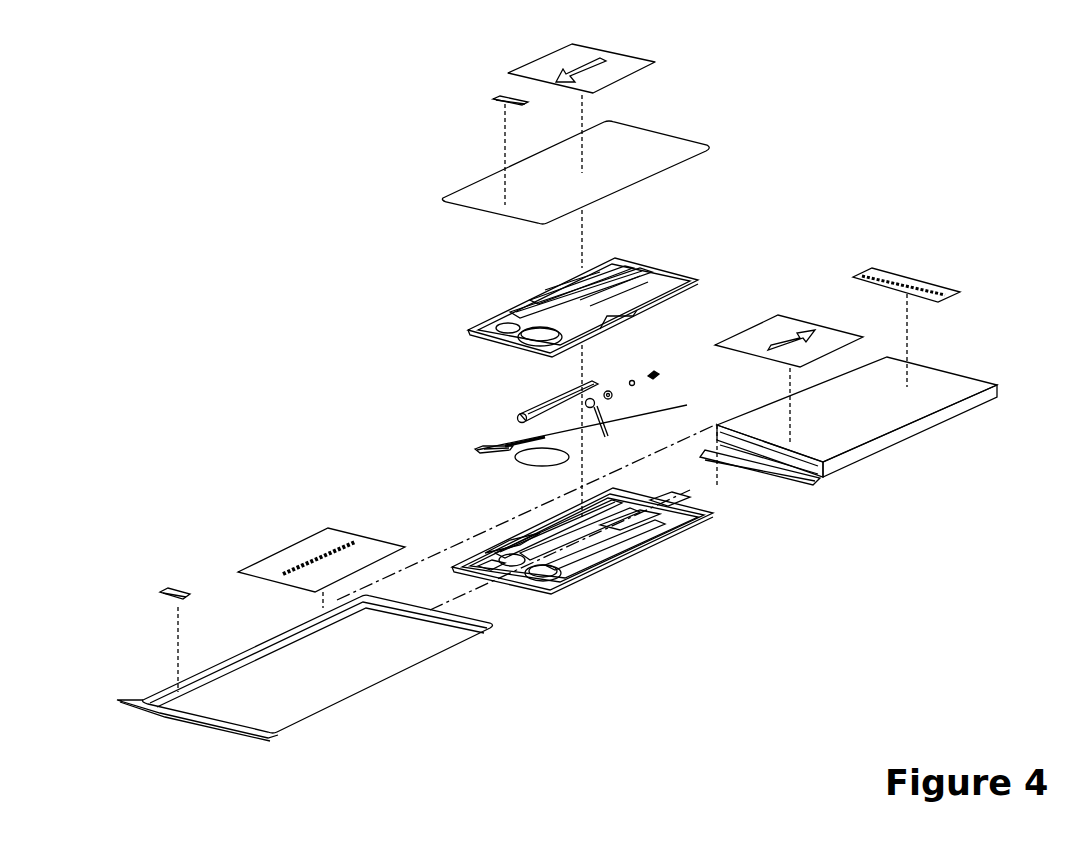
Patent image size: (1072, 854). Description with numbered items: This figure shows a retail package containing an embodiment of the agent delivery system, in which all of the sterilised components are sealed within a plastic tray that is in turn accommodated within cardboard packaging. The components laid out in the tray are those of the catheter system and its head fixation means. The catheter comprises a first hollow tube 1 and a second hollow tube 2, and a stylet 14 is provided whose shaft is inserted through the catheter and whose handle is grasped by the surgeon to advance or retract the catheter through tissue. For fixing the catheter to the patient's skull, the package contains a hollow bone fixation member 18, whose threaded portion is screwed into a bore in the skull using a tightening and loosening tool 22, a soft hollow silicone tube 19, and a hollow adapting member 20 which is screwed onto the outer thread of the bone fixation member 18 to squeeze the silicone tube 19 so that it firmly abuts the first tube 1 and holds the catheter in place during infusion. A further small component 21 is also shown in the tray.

The first hollow tube 1 is at (643, 417).
The second hollow tube 2 is at (527, 470).
The stylet 14 is at (458, 456).
The hollow bone fixation member 18 is at (655, 372).
The soft hollow silicone tube 19 is at (633, 381).
The hollow adapting member 20 is at (608, 390).
The pin with head 21 is at (604, 433).
The tightening and loosening tool 22 is at (540, 405).